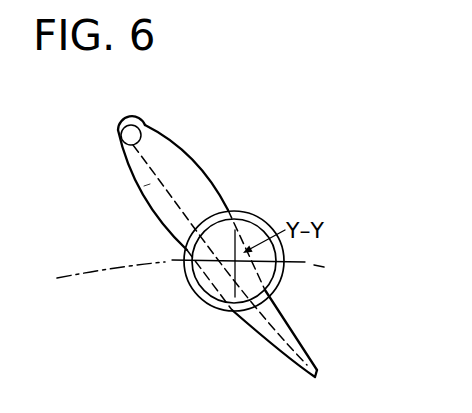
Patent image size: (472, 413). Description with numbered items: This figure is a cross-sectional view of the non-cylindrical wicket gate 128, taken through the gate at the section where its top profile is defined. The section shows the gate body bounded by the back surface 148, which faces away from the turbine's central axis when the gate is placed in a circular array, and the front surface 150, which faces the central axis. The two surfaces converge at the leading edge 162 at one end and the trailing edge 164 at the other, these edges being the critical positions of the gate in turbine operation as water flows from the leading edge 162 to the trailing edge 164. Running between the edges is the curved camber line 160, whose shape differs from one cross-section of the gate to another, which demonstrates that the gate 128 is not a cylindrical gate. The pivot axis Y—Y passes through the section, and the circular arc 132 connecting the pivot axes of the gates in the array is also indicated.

The wicket gate 128 is at (186, 184).
The circular arc 132 is at (372, 273).
The back surface 148 is at (240, 205).
The front surface 150 is at (151, 227).
The camber line 160 is at (157, 181).
The leading edge 162 is at (134, 113).
The trailing edge 164 is at (326, 365).